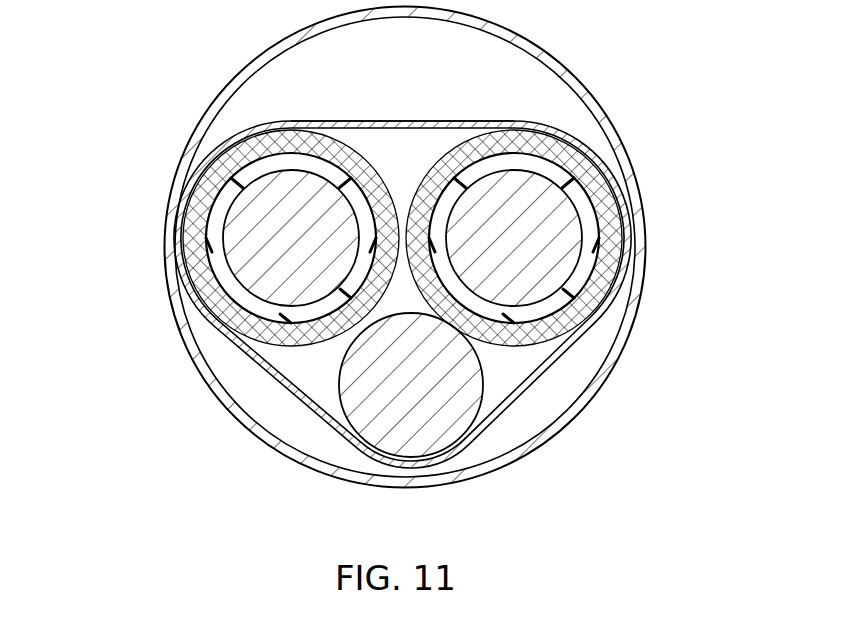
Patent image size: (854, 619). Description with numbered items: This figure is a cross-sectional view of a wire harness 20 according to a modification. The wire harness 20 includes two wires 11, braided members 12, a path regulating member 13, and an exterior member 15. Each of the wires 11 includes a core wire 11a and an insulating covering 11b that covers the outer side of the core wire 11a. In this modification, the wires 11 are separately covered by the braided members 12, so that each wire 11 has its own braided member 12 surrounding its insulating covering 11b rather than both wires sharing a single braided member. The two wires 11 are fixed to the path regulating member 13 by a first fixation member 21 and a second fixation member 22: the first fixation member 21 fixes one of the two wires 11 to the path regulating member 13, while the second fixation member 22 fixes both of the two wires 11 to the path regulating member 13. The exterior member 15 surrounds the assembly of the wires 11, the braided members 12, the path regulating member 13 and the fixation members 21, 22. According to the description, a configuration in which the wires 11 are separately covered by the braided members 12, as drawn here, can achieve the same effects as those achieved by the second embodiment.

The wire harness 20 is at (403, 255).
The exterior member 15 is at (638, 186).
The first fixation member 21 is at (548, 385).
The second fixation member 22 is at (394, 122).
The wire 11 is at (403, 238).
The core wire 11a is at (238, 212).
The insulating covering 11b is at (225, 182).
The braided member 12 is at (197, 275).
The path regulating member 13 is at (460, 425).